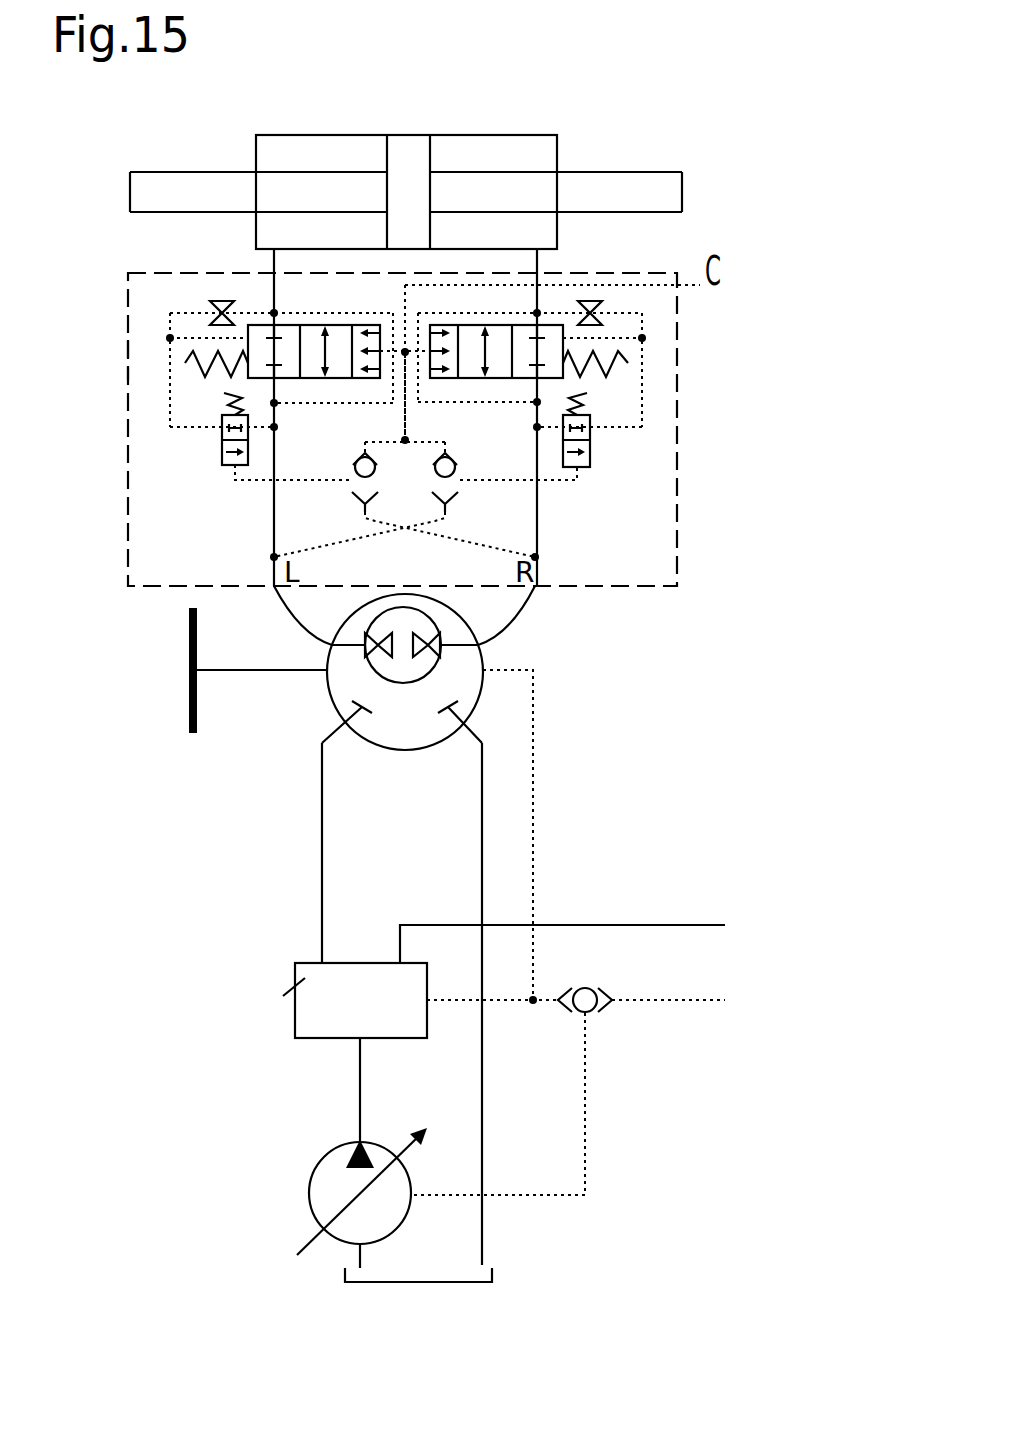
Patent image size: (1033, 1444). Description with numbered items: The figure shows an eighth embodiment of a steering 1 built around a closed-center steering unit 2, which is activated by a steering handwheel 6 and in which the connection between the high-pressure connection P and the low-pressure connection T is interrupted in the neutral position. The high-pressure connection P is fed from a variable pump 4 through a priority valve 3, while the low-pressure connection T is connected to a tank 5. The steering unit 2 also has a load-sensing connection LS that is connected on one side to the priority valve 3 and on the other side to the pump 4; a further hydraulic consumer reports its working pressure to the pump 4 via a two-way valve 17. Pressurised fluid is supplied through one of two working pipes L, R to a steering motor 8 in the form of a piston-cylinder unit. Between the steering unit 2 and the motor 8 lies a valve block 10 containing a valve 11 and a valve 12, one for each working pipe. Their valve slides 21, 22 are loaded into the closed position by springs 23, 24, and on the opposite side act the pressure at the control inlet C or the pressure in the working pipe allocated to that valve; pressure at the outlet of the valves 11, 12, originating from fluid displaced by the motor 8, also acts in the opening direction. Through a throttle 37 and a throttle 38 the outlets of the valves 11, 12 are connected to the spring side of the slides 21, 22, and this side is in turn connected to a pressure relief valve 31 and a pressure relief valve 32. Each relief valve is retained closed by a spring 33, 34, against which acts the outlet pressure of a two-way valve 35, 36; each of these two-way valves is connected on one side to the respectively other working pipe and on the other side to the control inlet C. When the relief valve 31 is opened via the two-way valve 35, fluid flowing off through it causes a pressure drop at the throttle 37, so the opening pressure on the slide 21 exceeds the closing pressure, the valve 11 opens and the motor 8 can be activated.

The steering 1 is at (773, 138).
The steering unit 2 is at (330, 702).
The priority valve 3 is at (298, 983).
The pump 4 is at (322, 1165).
The tank 5 is at (436, 1284).
The steering handwheel 6 is at (192, 641).
The steering motor 8 is at (482, 138).
The valve block 10 is at (678, 520).
The valve 11 is at (130, 360).
The valve 12 is at (592, 388).
The two-way valve 17 is at (598, 1012).
The valve slide 21 is at (313, 325).
The valve slide 22 is at (503, 325).
The spring 23 is at (195, 372).
The spring 24 is at (620, 365).
The pressure relief valve 31 is at (222, 468).
The pressure relief valve 32 is at (590, 463).
The spring 33 is at (230, 405).
The spring 34 is at (572, 403).
The two-way valve 35 is at (360, 500).
The two-way valve 36 is at (457, 497).
The throttle 37 is at (207, 302).
The throttle 38 is at (602, 322).